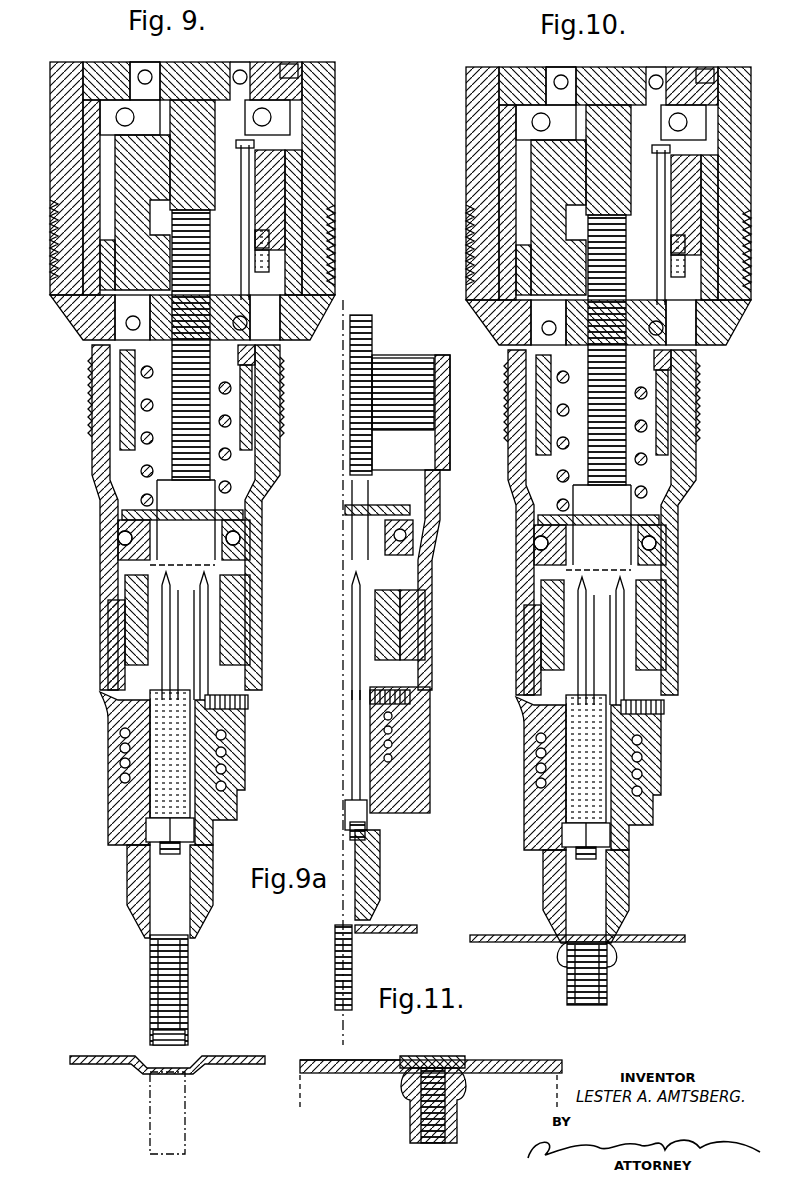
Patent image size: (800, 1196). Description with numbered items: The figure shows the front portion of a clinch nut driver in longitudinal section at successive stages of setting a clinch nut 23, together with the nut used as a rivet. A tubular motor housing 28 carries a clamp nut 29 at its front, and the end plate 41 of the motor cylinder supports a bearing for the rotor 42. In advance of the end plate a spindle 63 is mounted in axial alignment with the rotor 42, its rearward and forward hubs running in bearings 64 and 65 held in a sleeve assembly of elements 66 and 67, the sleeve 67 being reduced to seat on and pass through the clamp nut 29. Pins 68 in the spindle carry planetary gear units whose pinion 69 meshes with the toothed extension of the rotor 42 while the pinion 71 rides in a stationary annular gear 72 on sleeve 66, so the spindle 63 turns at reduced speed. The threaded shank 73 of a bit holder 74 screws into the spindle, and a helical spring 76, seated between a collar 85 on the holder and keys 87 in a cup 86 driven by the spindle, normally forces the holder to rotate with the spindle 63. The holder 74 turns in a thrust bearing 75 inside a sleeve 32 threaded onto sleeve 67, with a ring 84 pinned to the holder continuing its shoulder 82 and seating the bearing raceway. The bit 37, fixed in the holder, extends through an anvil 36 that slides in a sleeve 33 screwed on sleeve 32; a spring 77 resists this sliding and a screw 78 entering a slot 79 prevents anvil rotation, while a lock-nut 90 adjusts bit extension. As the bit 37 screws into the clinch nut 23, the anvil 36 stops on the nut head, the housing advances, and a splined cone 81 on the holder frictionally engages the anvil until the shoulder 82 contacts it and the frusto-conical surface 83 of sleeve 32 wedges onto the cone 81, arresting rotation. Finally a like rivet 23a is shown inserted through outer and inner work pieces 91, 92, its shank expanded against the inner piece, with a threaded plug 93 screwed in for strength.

In FIG. 9, the tubular motor housing 28 is at (55, 78).
In FIG. 10, the tubular motor housing 28 is at (594, 183).
In FIG. 9, the clamp nut 29 is at (66, 299).
In FIG. 10, the clamp nut 29 is at (592, 322).
In FIG. 9, the cylinder end plate 41 is at (140, 64).
In FIG. 10, the cylinder end plate 41 is at (552, 72).
In FIG. 9, the rotor 42 is at (237, 66).
In FIG. 10, the rotor 42 is at (619, 127).
In FIG. 9, the rear bearing 64 is at (286, 67).
In FIG. 10, the rear bearing 64 is at (717, 61).
In FIG. 9, the spindle 63 is at (125, 160).
In FIG. 10, the spindle 63 is at (509, 200).
In FIG. 9, the sleeve element 66 is at (90, 184).
In FIG. 10, the sleeve element 66 is at (473, 202).
In FIG. 9, the sleeve 67 is at (82, 260).
In FIG. 10, the sleeve 67 is at (589, 250).
In FIG. 9, the pin 68 is at (255, 152).
In FIG. 10, the pin 68 is at (721, 216).
In FIG. 9, the pinion 69 is at (270, 186).
In FIG. 10, the pinion 69 is at (725, 202).
In FIG. 9, the pinion 71 is at (265, 240).
In FIG. 10, the pinion 71 is at (730, 239).
In FIG. 9, the stationary annular gear 72 is at (265, 258).
In FIG. 10, the stationary annular gear 72 is at (730, 266).
In FIG. 9, the shank 73 is at (172, 282).
In FIG. 9A, the shank 73 is at (372, 345).
In FIG. 10, the shank 73 is at (590, 350).
In FIG. 9, the forward bearing 65 is at (115, 335).
In FIG. 10, the forward bearing 65 is at (581, 335).
In FIG. 9, the helical spring 76 is at (130, 392).
In FIG. 10, the helical spring 76 is at (559, 433).
In FIG. 9, the cup 86 is at (252, 402).
In FIG. 10, the cup 86 is at (701, 412).
In FIG. 9, the keys 87 is at (256, 358).
In FIG. 10, the keys 87 is at (700, 367).
In FIG. 9, the sleeve 32 is at (97, 468).
In FIG. 9A, the sleeve 32 is at (425, 430).
In FIG. 10, the sleeve 32 is at (586, 522).
In FIG. 9, the collar 85 is at (122, 515).
In FIG. 9A, the collar 85 is at (386, 508).
In FIG. 10, the collar 85 is at (565, 507).
In FIG. 9, the thrust bearing 75 is at (120, 538).
In FIG. 10, the thrust bearing 75 is at (564, 532).
In FIG. 9, the bit holder 74 is at (165, 548).
In FIG. 9A, the bit holder 74 is at (358, 522).
In FIG. 10, the bit holder 74 is at (551, 525).
In FIG. 9, the ring 84 is at (215, 576).
In FIG. 10, the ring 84 is at (635, 547).
In FIG. 9, the shoulder 82 is at (230, 617).
In FIG. 10, the shoulder 82 is at (657, 635).
In FIG. 9, the frusto-conical surface 83 is at (125, 623).
In FIG. 9A, the frusto-conical surface 83 is at (392, 598).
In FIG. 10, the frusto-conical surface 83 is at (518, 625).
In FIG. 9, the cone 81 is at (115, 657).
In FIG. 9A, the cone 81 is at (388, 632).
In FIG. 10, the cone 81 is at (567, 637).
In FIG. 9, the sleeve 33 is at (103, 700).
In FIG. 9A, the sleeve 33 is at (405, 760).
In FIG. 10, the sleeve 33 is at (574, 773).
In FIG. 9, the spring 77 is at (120, 740).
In FIG. 9A, the spring 77 is at (400, 732).
In FIG. 10, the spring 77 is at (516, 760).
In FIG. 9, the screw 78 is at (232, 718).
In FIG. 9A, the screw 78 is at (372, 697).
In FIG. 10, the screw 78 is at (666, 722).
In FIG. 9, the slot 79 is at (210, 750).
In FIG. 10, the slot 79 is at (681, 732).
In FIG. 9, the lock-nut 90 is at (195, 832).
In FIG. 9A, the lock-nut 90 is at (348, 818).
In FIG. 10, the lock-nut 90 is at (637, 777).
In FIG. 9, the anvil 36 is at (134, 897).
In FIG. 9A, the anvil 36 is at (380, 885).
In FIG. 10, the anvil 36 is at (570, 896).
In FIG. 9, the bit 37 is at (150, 992).
In FIG. 9A, the bit 37 is at (370, 912).
In FIG. 10, the bit 37 is at (577, 970).
In FIG. 9, the clinch nut 23 is at (152, 1024).
In FIG. 9A, the clinch nut 23 is at (355, 958).
In FIG. 10, the clinch nut 23 is at (604, 963).
In FIG. 11, the outer work piece 91 is at (356, 1062).
In FIG. 11, the inner work piece 92 is at (360, 1073).
In FIG. 11, the threaded plug 93 is at (462, 1064).
In FIG. 11, the rivet 23a is at (458, 1108).